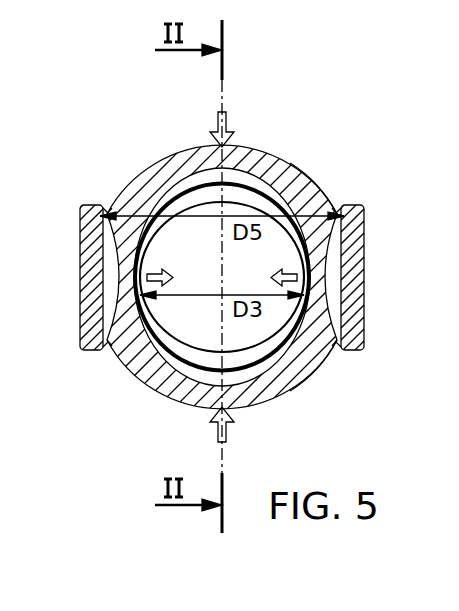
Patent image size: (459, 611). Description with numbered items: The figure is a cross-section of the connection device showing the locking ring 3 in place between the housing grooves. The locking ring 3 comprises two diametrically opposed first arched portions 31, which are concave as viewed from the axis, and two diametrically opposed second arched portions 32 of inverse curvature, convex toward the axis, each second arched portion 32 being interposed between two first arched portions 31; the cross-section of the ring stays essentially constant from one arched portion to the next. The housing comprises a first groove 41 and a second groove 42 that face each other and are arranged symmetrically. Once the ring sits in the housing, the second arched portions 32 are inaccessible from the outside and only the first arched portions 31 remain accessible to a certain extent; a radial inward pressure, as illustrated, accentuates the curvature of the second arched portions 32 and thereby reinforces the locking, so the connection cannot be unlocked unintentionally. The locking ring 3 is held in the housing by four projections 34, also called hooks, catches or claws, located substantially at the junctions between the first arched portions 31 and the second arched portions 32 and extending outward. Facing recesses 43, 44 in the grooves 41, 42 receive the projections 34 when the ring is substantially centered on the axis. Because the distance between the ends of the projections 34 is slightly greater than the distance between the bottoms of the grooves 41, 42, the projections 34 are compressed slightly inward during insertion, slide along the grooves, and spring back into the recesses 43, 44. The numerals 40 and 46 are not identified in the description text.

The locking ring 3 is at (273, 134).
The first arched portions 31 is at (198, 149).
The second arched portions 32 is at (139, 247).
The projections 34 is at (105, 212).
The ring assembly 40 is at (329, 159).
The first groove 41 is at (342, 274).
The second groove 42 is at (104, 271).
The recess 43 is at (99, 350).
The recess 44 is at (98, 207).
The outer surface region 46 is at (328, 393).